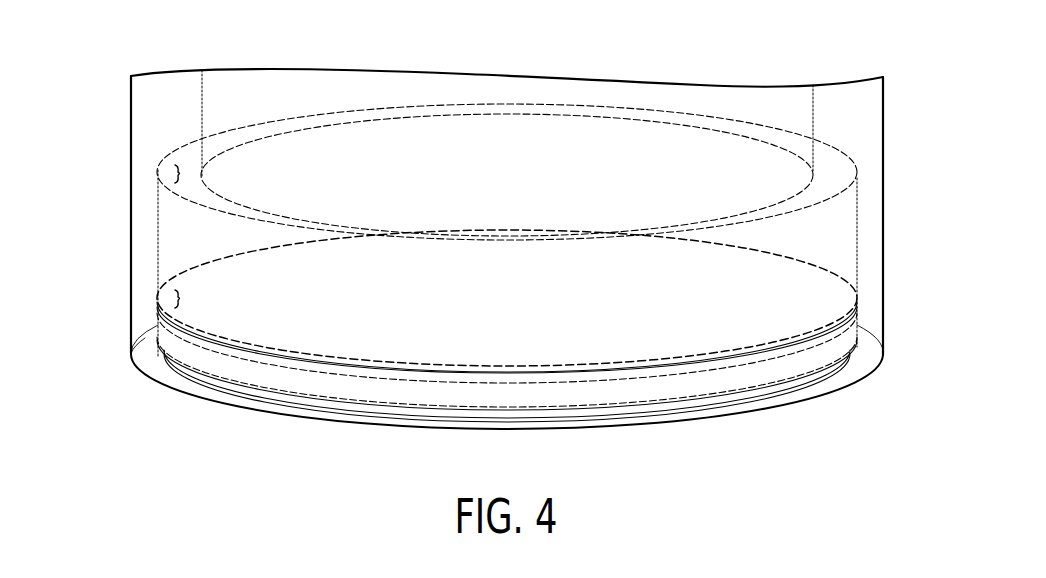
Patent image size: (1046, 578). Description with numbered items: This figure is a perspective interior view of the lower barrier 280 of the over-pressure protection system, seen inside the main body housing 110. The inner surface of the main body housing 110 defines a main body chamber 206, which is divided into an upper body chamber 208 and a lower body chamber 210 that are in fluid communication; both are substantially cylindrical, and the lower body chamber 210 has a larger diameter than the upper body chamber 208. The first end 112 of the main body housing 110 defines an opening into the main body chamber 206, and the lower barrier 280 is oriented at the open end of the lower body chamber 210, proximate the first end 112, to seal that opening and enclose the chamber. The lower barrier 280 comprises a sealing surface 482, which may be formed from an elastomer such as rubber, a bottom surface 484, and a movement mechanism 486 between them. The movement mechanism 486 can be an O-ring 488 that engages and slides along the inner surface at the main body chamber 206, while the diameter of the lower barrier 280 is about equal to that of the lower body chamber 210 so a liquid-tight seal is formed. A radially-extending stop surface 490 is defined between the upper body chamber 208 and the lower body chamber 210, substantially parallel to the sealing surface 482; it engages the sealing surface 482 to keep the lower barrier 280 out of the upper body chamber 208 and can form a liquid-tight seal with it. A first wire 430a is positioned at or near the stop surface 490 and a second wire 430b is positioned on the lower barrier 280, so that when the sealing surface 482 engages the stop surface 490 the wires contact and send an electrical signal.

The main body housing 110 is at (152, 118).
The first end 112 is at (150, 383).
The lower barrier 280 is at (115, 349).
The upper body chamber 208 is at (232, 90).
The main body chamber 206 is at (527, 107).
The stop surface 490 is at (832, 166).
The sealing surface 482 is at (818, 292).
The movement mechanism 486 is at (835, 352).
The O-ring 488 is at (248, 373).
The bottom surface 484 is at (835, 373).
The first wire 430a is at (176, 172).
The second wire 430b is at (176, 298).
The lower body chamber 210 is at (160, 241).